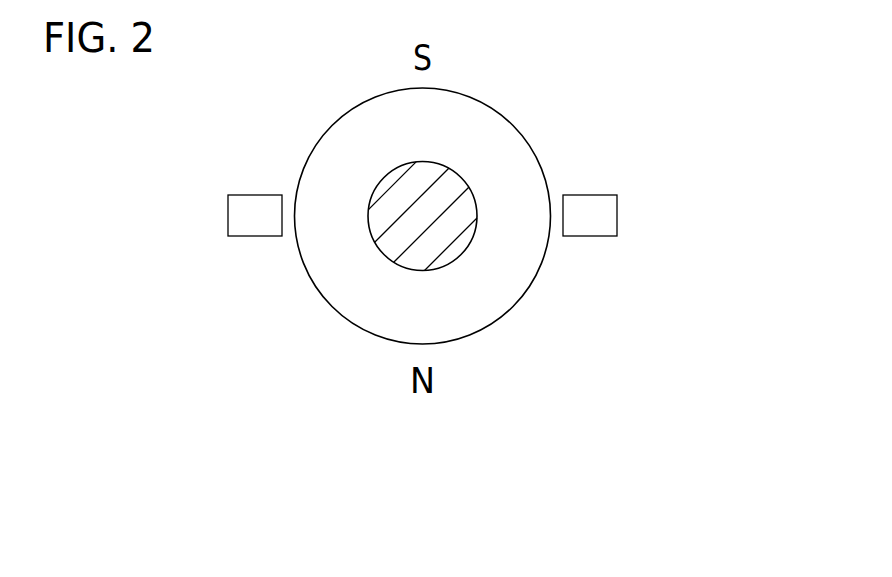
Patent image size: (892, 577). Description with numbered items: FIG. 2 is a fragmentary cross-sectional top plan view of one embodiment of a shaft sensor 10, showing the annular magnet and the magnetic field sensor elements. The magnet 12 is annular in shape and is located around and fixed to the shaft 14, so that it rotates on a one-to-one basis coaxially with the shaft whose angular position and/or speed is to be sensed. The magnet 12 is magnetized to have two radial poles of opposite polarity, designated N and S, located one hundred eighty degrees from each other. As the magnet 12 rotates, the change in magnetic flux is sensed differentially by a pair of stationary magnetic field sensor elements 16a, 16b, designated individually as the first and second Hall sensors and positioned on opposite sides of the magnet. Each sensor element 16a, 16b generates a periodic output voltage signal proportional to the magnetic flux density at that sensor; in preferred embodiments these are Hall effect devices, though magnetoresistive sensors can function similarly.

The shaft sensor 10 is at (278, 344).
The magnet 12 is at (523, 135).
The shaft 14 is at (443, 238).
The magnetic field sensor element 16a is at (228, 217).
The magnetic field sensor element 16b is at (617, 215).